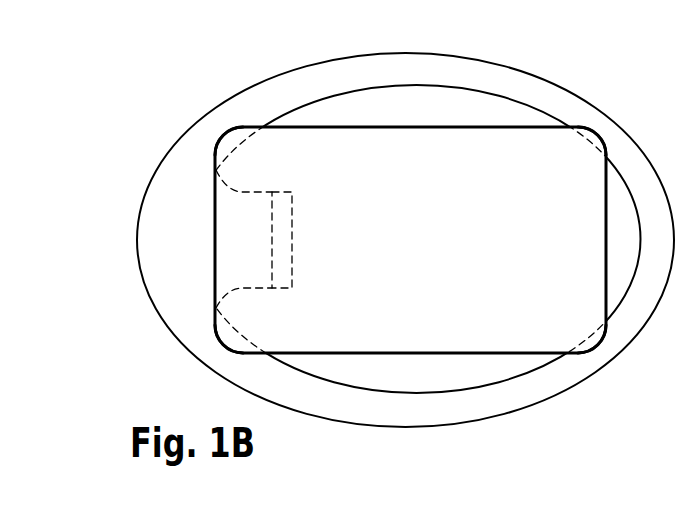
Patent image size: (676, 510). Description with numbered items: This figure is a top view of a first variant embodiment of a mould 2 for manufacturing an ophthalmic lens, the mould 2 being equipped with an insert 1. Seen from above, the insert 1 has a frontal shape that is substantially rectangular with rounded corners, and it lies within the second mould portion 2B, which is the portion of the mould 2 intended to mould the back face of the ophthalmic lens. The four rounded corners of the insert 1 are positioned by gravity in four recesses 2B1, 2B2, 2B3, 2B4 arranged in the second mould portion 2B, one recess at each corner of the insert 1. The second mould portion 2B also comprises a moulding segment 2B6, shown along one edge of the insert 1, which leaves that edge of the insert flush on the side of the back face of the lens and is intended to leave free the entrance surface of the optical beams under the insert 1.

The insert 1 is at (430, 206).
The mould 2 is at (406, 240).
The second mould portion 2B is at (493, 392).
The recess 2B1 is at (220, 136).
The recess 2B2 is at (595, 130).
The recess 2B3 is at (597, 349).
The recess 2B4 is at (222, 346).
The moulding segment 2B6 is at (247, 244).